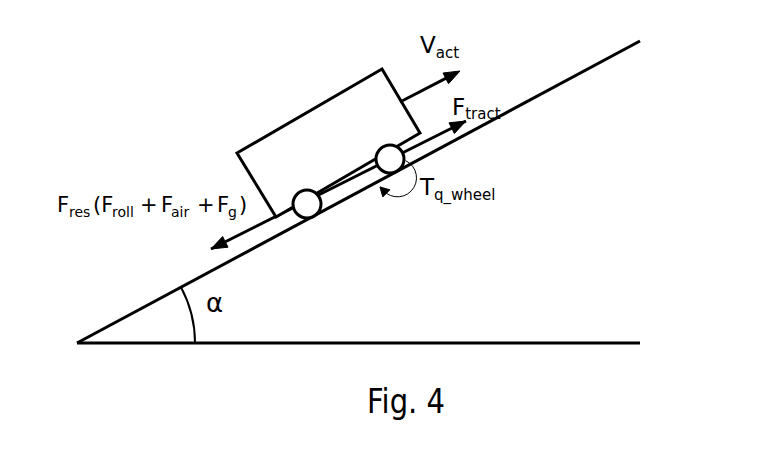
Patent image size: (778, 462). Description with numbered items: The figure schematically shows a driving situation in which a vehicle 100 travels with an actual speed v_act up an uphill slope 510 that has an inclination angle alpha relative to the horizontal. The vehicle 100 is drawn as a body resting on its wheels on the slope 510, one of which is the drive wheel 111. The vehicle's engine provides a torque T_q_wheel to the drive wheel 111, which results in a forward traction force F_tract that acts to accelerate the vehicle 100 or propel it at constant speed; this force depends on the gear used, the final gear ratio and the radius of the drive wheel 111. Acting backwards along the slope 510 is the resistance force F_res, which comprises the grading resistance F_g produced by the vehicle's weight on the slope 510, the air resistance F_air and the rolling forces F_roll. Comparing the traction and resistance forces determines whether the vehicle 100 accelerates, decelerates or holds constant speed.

The vehicle 100 is at (383, 126).
The drive wheel 111 is at (390, 159).
The uphill slope 510 is at (547, 126).